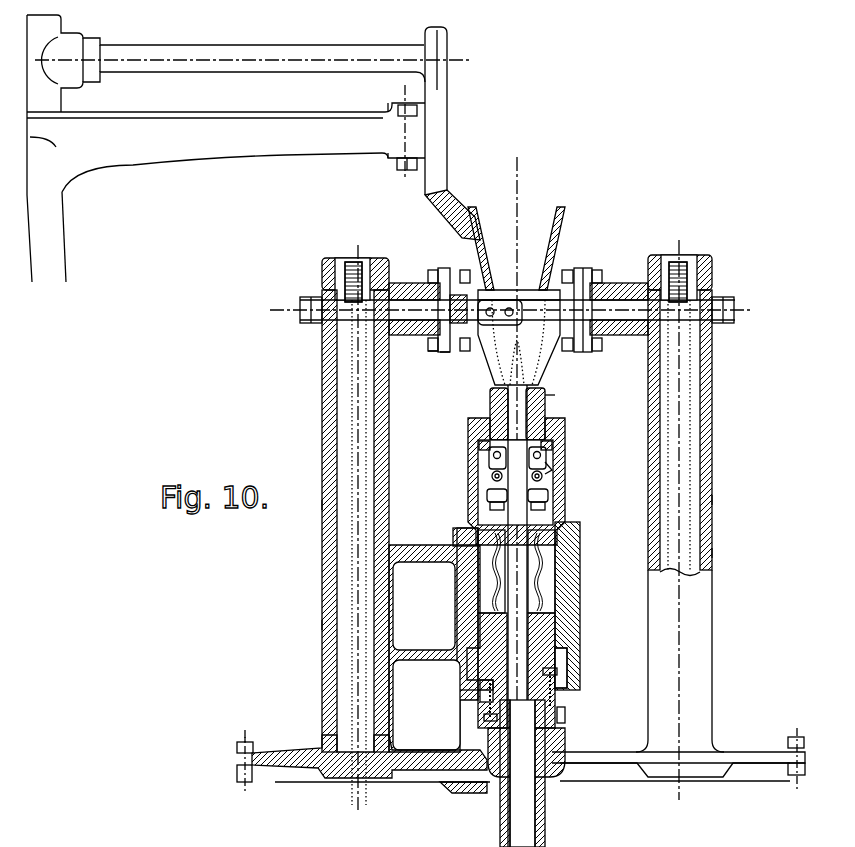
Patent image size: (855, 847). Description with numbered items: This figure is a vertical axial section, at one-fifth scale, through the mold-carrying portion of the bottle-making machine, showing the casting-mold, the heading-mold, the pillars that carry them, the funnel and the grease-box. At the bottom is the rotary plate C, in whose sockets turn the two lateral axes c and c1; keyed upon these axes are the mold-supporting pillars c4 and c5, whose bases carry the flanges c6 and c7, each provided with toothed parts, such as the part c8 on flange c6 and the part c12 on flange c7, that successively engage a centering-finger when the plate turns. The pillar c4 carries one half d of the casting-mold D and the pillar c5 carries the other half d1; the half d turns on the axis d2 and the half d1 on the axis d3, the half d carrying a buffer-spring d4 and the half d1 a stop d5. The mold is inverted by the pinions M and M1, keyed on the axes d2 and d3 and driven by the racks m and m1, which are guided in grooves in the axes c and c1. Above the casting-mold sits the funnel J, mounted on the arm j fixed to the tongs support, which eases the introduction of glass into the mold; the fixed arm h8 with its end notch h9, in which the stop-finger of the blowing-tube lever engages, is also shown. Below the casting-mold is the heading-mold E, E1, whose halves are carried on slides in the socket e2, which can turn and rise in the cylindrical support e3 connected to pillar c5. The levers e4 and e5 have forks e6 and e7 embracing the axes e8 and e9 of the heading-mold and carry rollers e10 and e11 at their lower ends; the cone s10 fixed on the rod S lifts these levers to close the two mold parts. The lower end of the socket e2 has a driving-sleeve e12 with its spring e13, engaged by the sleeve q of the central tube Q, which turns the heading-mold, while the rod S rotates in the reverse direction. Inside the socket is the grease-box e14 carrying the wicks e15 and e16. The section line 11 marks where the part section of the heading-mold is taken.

The arm j is at (248, 63).
The fixed arm h8 is at (226, 148).
The notch h9 is at (400, 127).
The section line 11 is at (517, 486).
The funnel J is at (516, 248).
The casting-mold D is at (519, 337).
The half of the casting-mold d is at (590, 270).
The half of the casting-mold d1 is at (444, 270).
The axis d2 is at (596, 272).
The axis d3 is at (440, 272).
The buffer-spring d4 is at (460, 352).
The stop d5 is at (440, 350).
The pinion M is at (322, 345).
The pinion M1 is at (712, 345).
The rack m is at (353, 256).
The rack m1 is at (678, 248).
The heading-mold half E is at (490, 410).
The heading-mold half E1 is at (545, 410).
The socket e2 is at (566, 522).
The cylindrical support e3 is at (580, 628).
The lever e4 is at (489, 458).
The lever e5 is at (546, 460).
The fork e6 is at (479, 448).
The fork e7 is at (552, 448).
The axis e8 is at (490, 476).
The axis e9 is at (545, 478).
The roller e10 is at (487, 496).
The roller e11 is at (548, 496).
The driving-sleeve e12 is at (552, 720).
The spring e13 is at (484, 716).
The grease-box e14 is at (578, 580).
The wick e15 is at (555, 552).
The wick e16 is at (456, 540).
The cone s10 is at (552, 470).
The driving-sleeve q is at (552, 740).
The central tube Q is at (556, 806).
The rod S is at (570, 842).
The plate C is at (445, 790).
The lateral axis c is at (712, 553).
The lateral axis c1 is at (322, 624).
The mold-supporting pillar c4 is at (712, 500).
The mold-supporting pillar c5 is at (322, 503).
The flange c6 is at (765, 765).
The flange c7 is at (290, 752).
The toothed part c8 is at (800, 790).
The toothed part c12 is at (236, 775).